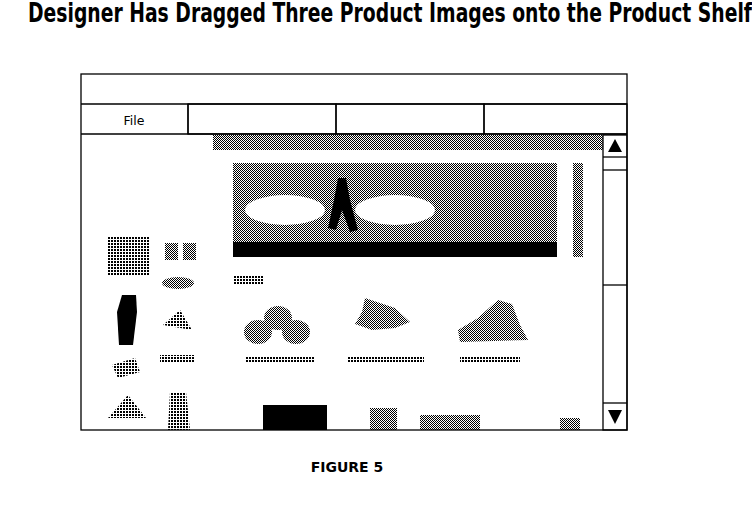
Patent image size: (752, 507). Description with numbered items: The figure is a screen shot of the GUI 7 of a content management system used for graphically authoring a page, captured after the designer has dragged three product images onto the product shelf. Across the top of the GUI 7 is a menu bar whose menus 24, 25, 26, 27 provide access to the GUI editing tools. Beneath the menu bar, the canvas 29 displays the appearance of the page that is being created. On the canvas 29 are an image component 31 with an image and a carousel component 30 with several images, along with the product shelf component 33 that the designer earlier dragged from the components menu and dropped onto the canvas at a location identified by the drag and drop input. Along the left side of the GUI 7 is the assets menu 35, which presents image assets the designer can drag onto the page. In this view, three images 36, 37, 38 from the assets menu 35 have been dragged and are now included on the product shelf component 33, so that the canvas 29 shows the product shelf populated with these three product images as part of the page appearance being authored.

The GUI 7 is at (106, 74).
The menu 24 is at (94, 118).
The menu 25 is at (297, 113).
The menu 26 is at (454, 113).
The menu 27 is at (595, 113).
The canvas 29 is at (586, 271).
The carousel component 30 is at (243, 403).
The image component 31 is at (343, 183).
The product shelf component 33 is at (235, 280).
The assets menu 35 is at (103, 188).
The image 36 is at (240, 335).
The image 37 is at (412, 350).
The image 38 is at (521, 345).